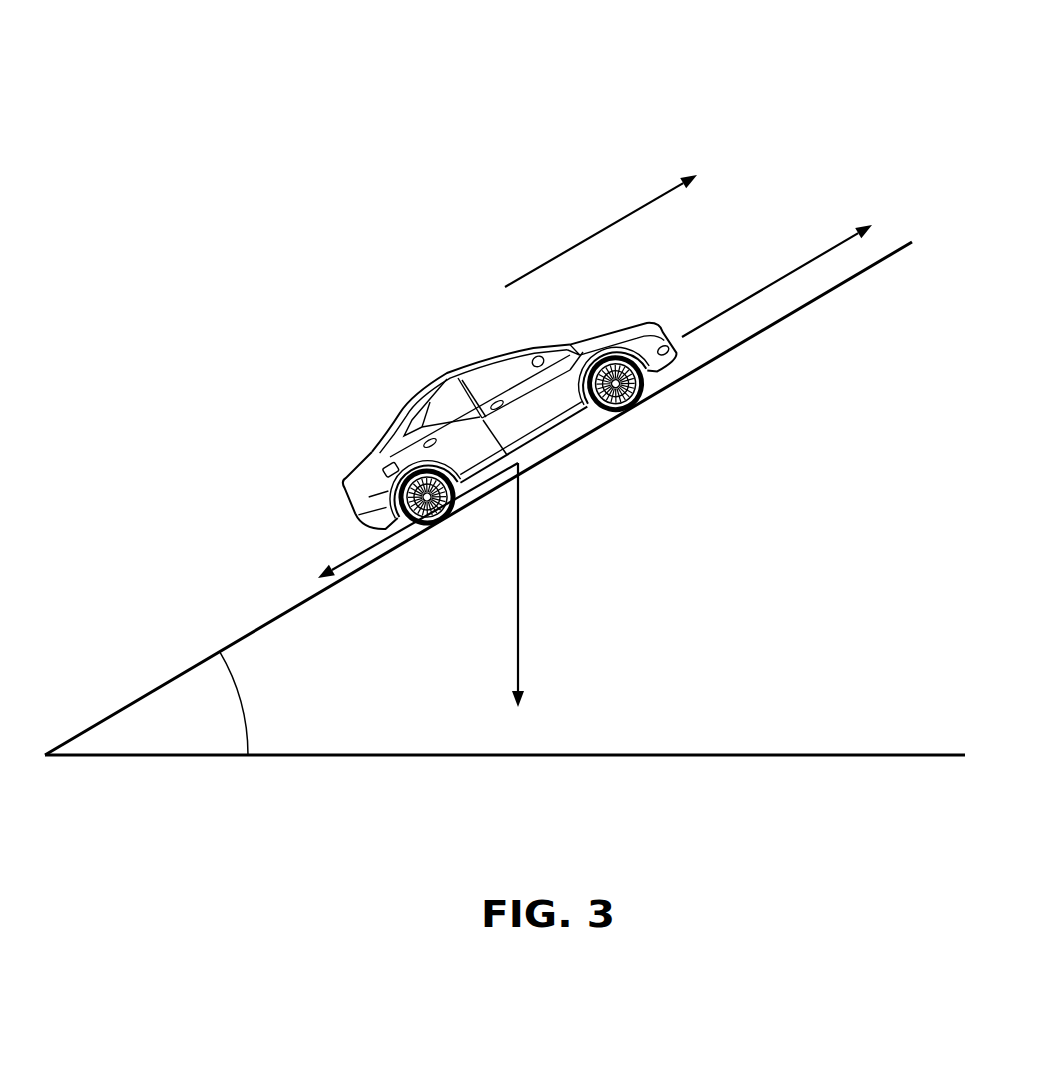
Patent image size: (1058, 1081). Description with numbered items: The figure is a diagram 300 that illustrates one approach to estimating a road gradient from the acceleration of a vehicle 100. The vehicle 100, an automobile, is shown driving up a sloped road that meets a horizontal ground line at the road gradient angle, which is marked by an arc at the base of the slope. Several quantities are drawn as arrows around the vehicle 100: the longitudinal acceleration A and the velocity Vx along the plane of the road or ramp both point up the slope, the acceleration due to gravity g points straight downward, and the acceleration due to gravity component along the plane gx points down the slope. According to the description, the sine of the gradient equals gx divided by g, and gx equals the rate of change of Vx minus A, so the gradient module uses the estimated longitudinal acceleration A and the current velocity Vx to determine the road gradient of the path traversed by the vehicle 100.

The vehicle 100 is at (410, 414).
The diagram 300 is at (798, 128).
The velocity along the plane of the road/ramp Vx is at (601, 231).
The longitudinal acceleration A is at (777, 281).
The acceleration due to gravity g is at (525, 585).
The acceleration due to gravity component along the plane gx is at (418, 520).